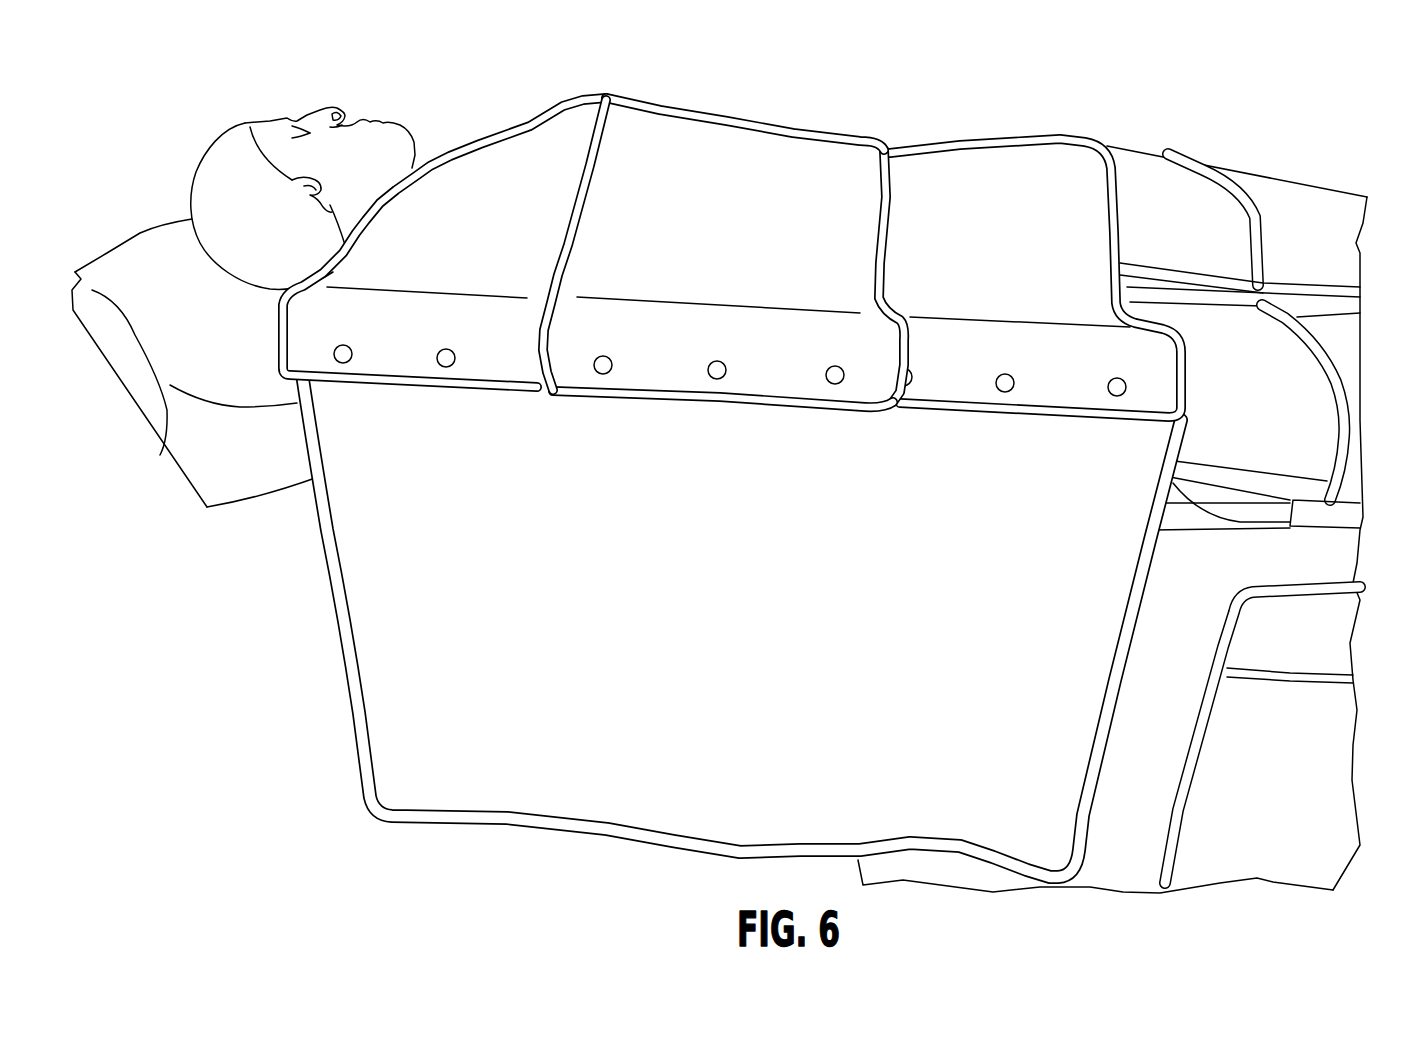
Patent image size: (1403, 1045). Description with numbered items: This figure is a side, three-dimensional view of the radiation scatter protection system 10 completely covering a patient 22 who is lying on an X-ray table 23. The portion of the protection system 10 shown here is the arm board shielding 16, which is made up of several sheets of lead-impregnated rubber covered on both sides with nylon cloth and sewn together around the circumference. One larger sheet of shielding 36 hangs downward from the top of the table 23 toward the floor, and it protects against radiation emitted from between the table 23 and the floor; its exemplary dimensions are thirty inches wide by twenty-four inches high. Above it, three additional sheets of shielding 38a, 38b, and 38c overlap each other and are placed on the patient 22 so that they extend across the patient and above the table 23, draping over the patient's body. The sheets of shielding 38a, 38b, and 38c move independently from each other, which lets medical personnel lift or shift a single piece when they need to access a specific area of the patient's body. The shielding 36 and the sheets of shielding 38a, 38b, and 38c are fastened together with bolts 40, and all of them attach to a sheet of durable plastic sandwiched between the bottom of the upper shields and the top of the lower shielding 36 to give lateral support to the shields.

The protection system 10 is at (708, 451).
The arm board shielding 16 is at (708, 458).
The patient 22 is at (388, 157).
The table 23 is at (210, 365).
The sheet of shielding 36 is at (387, 713).
The sheet of shielding 38a is at (553, 140).
The sheet of shielding 38b is at (675, 160).
The sheet of shielding 38c is at (1008, 185).
The bolts 40 is at (352, 358).